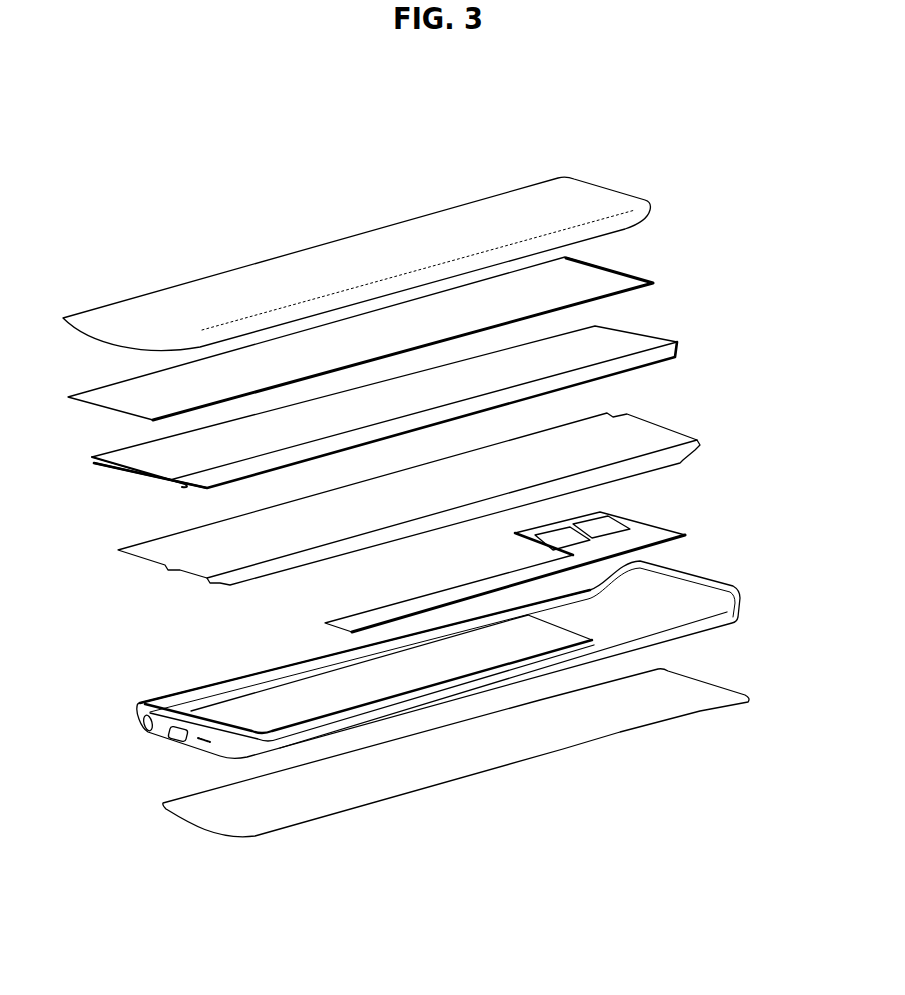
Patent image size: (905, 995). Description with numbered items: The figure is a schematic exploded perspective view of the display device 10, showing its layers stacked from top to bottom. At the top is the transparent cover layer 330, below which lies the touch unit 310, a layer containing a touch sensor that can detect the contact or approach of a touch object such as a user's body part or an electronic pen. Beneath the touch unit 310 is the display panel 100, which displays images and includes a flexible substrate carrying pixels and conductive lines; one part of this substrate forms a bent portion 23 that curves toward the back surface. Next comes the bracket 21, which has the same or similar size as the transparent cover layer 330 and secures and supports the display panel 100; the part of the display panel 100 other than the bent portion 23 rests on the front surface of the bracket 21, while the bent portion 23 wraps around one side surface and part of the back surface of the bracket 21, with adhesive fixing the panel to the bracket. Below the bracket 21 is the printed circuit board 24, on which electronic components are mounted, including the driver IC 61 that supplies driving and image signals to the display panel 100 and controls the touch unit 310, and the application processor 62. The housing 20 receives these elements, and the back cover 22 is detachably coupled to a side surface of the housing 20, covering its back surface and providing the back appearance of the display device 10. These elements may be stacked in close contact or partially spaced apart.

The display device 10 is at (653, 135).
The transparent cover layer 330 is at (646, 207).
The touch unit 310 is at (626, 282).
The display panel 100 is at (648, 335).
The bent portion 23 is at (130, 476).
The bracket 21 is at (656, 432).
The printed circuit board 24 is at (658, 532).
The driver IC 61 is at (603, 523).
The application processor 62 is at (536, 537).
The housing 20 is at (710, 590).
The back cover 22 is at (708, 687).